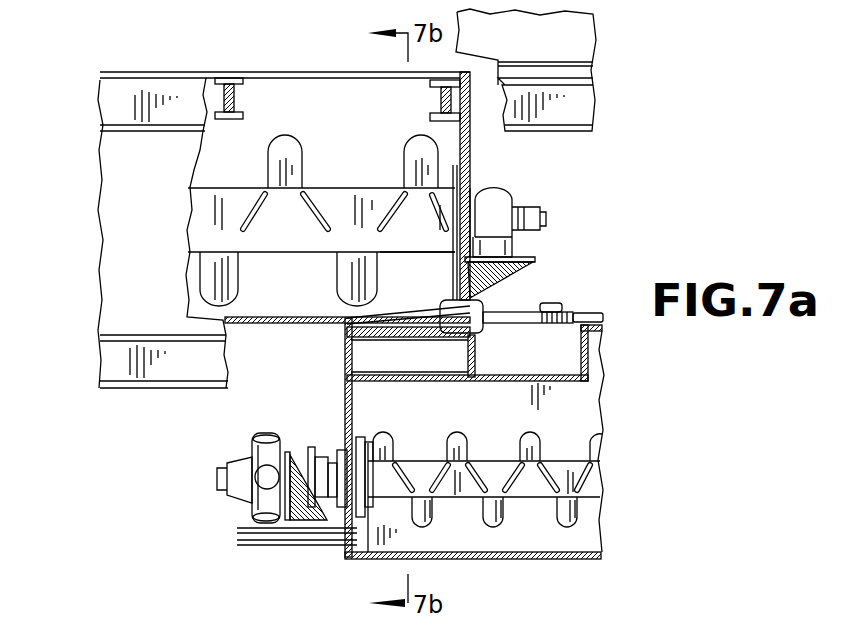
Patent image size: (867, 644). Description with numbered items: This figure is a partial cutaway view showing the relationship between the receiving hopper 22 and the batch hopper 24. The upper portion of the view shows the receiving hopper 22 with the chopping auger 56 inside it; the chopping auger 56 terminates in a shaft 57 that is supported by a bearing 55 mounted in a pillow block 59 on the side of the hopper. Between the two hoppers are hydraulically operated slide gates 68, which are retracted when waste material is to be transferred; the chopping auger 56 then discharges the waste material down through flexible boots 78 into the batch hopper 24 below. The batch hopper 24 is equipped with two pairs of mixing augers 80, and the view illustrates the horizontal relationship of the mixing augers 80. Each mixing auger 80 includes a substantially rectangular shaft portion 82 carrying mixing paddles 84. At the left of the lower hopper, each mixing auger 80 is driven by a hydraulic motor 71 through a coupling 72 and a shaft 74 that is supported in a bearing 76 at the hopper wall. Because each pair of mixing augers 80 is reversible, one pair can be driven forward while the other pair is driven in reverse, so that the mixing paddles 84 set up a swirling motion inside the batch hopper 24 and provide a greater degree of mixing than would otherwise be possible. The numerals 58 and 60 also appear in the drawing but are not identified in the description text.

The receiving hopper 22 is at (100, 212).
The batch hopper 24 is at (553, 562).
The bearing 55 is at (515, 244).
The chopping auger 56 is at (347, 180).
The shaft 57 is at (538, 222).
The plate underside 58 is at (390, 254).
The pillow block 59 is at (508, 190).
The pins 60 is at (212, 290).
The hydraulically operated slide gates 68 is at (510, 322).
The hydraulic motor 71 is at (230, 495).
The coupling 72 is at (300, 445).
The shaft 74 is at (330, 455).
The bearing 76 is at (340, 455).
The flexible boots 78 is at (352, 357).
The mixing augers 80 is at (424, 440).
The rectangular shaft portion 82 is at (456, 465).
The mixing paddles 84 is at (465, 438).